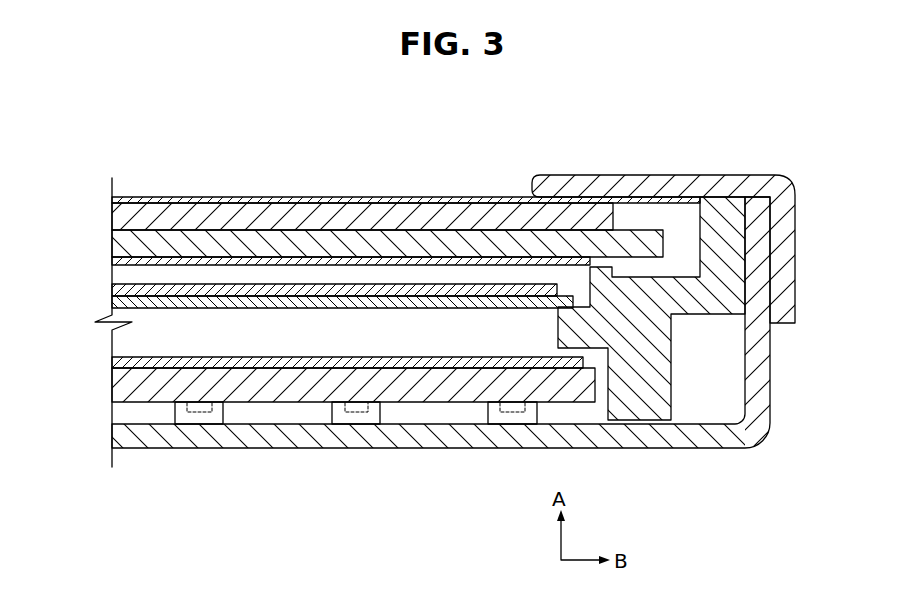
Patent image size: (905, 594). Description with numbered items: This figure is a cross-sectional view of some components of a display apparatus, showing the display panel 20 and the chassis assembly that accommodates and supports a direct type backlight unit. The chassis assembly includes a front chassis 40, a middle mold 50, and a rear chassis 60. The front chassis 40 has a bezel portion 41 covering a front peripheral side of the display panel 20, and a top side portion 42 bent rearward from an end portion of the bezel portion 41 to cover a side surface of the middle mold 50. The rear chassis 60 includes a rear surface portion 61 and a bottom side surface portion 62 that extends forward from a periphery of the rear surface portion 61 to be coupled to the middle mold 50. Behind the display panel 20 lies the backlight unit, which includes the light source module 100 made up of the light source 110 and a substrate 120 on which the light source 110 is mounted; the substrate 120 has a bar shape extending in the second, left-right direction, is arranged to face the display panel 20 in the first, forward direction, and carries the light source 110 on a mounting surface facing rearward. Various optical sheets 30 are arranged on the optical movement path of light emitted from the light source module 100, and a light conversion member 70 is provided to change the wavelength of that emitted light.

The display panel 20 is at (99, 212).
The optical sheets 30 is at (99, 298).
The front chassis 40 is at (698, 211).
The bezel portion 41 is at (707, 196).
The top side portion 42 is at (817, 233).
The middle mold 50 is at (727, 277).
The rear chassis 60 is at (477, 368).
The rear surface portion 61 is at (705, 440).
The bottom side surface portion 62 is at (793, 345).
The light conversion member 70 is at (290, 365).
The light source module 100 is at (356, 468).
The light source 110 is at (357, 417).
The substrate 120 is at (357, 495).